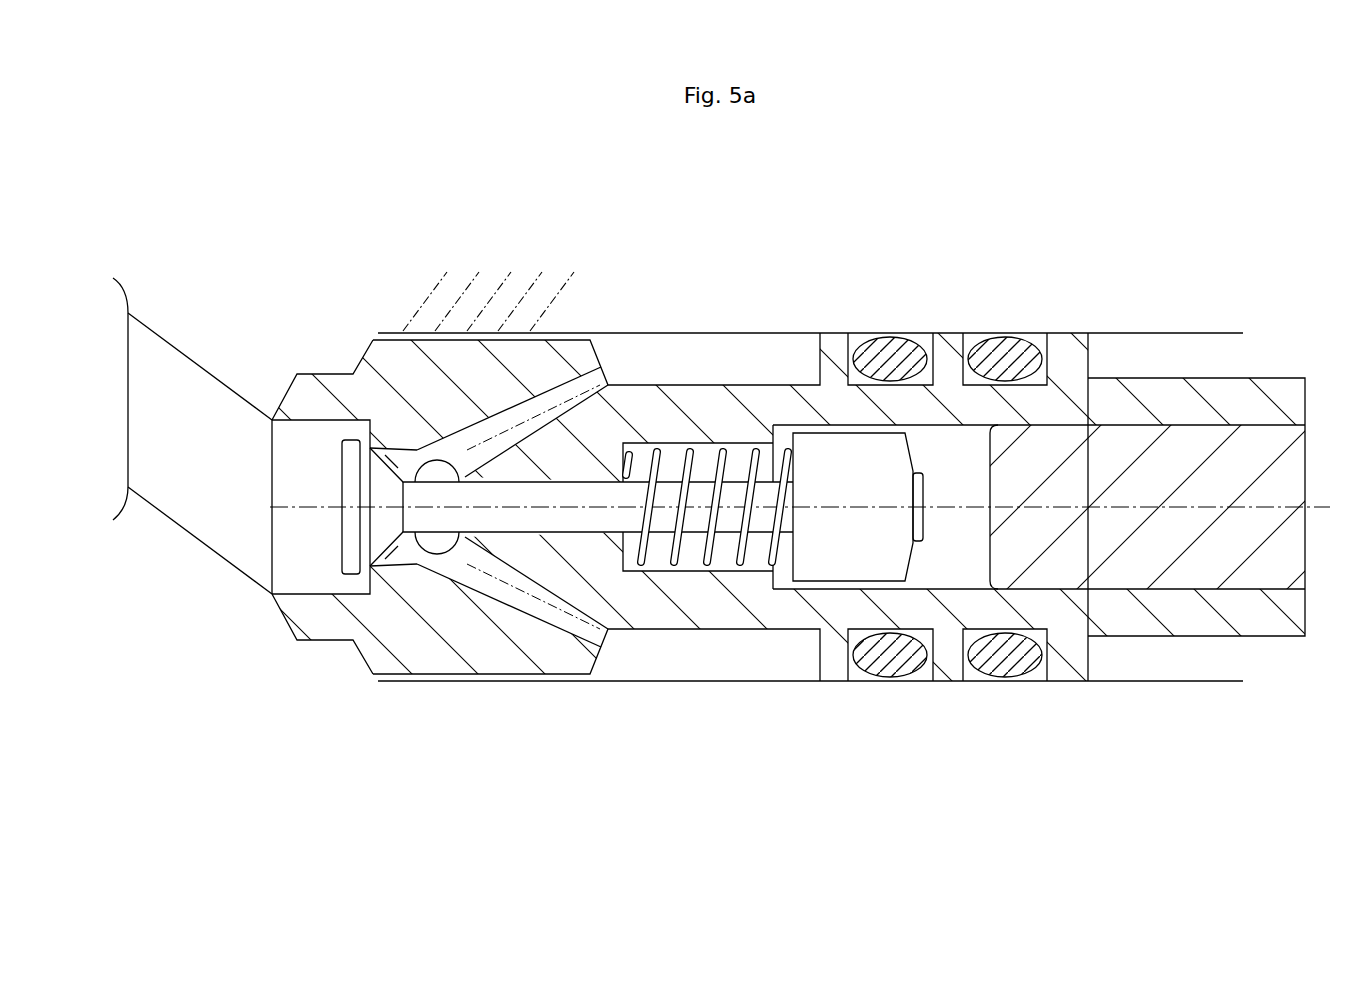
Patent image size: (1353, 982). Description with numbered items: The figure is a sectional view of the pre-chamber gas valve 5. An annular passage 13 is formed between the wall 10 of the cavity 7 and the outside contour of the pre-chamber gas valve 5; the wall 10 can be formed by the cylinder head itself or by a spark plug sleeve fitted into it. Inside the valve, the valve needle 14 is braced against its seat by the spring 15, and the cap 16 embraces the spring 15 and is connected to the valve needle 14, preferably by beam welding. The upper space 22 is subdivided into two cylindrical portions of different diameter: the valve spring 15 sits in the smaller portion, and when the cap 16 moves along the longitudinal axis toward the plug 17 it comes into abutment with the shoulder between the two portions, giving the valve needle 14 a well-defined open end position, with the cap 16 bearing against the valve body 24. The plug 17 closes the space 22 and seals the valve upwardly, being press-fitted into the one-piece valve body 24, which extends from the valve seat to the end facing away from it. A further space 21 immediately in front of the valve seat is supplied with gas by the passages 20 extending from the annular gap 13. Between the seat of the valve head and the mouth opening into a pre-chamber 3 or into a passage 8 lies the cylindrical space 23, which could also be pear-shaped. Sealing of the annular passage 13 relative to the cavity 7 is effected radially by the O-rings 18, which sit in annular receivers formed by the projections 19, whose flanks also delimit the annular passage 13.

The pre-chamber 3 is at (86, 407).
The pre-chamber gas valve 5 is at (612, 250).
The cavity 7 is at (1248, 348).
The passage 8 is at (209, 492).
The wall 10 is at (1165, 330).
The annular passage 13 is at (708, 352).
The valve needle 14 is at (605, 525).
The spring 15 is at (707, 570).
The cap 16 is at (837, 557).
The plug 17 is at (1117, 557).
The O-rings 18 is at (887, 650).
The projections 19 is at (1060, 345).
The passages 20 is at (560, 410).
The space 21 is at (378, 683).
The upper space 22 is at (934, 559).
The space 23 is at (294, 559).
The valve body 24 is at (1247, 613).